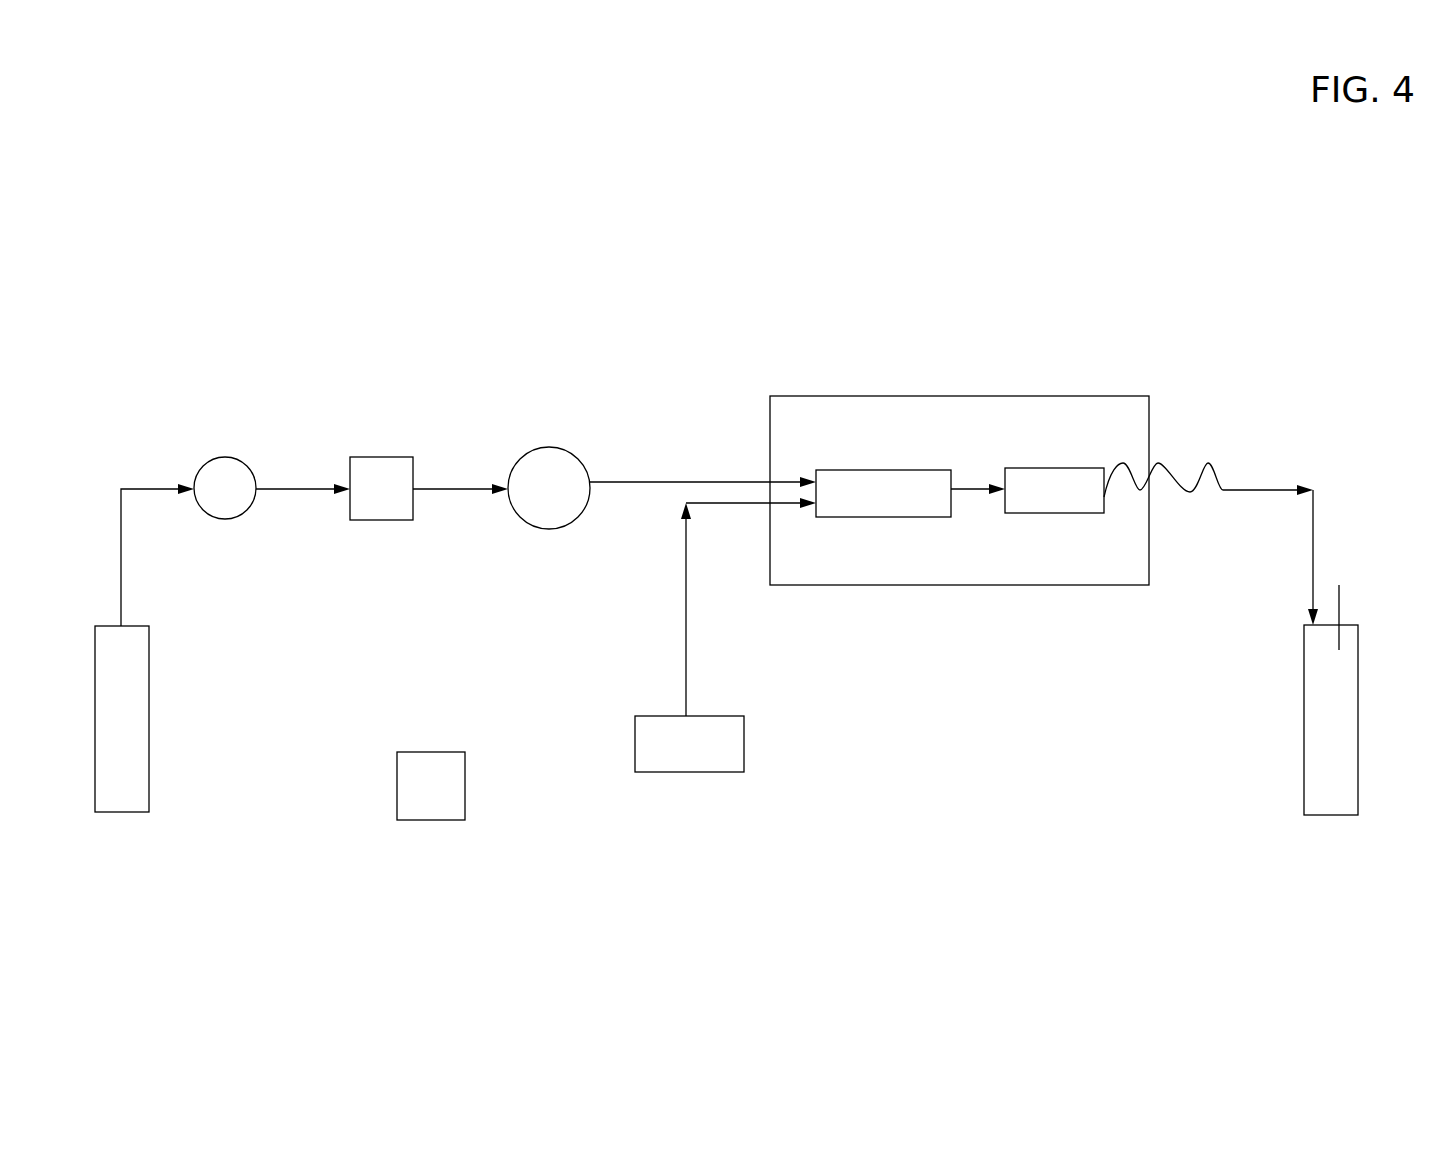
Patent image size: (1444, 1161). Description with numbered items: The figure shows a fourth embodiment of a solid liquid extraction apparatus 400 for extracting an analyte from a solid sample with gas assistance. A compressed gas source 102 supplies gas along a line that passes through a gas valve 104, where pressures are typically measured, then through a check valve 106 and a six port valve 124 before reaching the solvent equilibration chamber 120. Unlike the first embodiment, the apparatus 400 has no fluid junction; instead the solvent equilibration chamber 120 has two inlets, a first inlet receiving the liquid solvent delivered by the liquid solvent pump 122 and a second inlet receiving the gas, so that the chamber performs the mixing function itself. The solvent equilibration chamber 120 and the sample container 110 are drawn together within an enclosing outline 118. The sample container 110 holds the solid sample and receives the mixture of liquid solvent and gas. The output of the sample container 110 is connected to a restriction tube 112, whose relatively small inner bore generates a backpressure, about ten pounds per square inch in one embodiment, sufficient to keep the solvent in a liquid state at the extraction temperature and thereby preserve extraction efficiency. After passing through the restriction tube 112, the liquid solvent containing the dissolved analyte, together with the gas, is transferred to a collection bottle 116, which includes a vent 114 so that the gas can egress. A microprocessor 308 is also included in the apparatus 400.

The solid liquid extraction apparatus 400 is at (958, 215).
The compressed gas source 102 is at (151, 797).
The gas valve 104 is at (225, 457).
The check valve 106 is at (382, 457).
The six port valve 124 is at (537, 447).
The housing 118 is at (870, 585).
The solvent equilibration chamber 120 is at (853, 470).
The sample container 110 is at (1020, 468).
The restriction tube 112 is at (1178, 475).
The vent 114 is at (1340, 602).
The collection bottle 116 is at (1303, 773).
The liquid solvent pump 122 is at (745, 753).
The microprocessor 308 is at (466, 804).